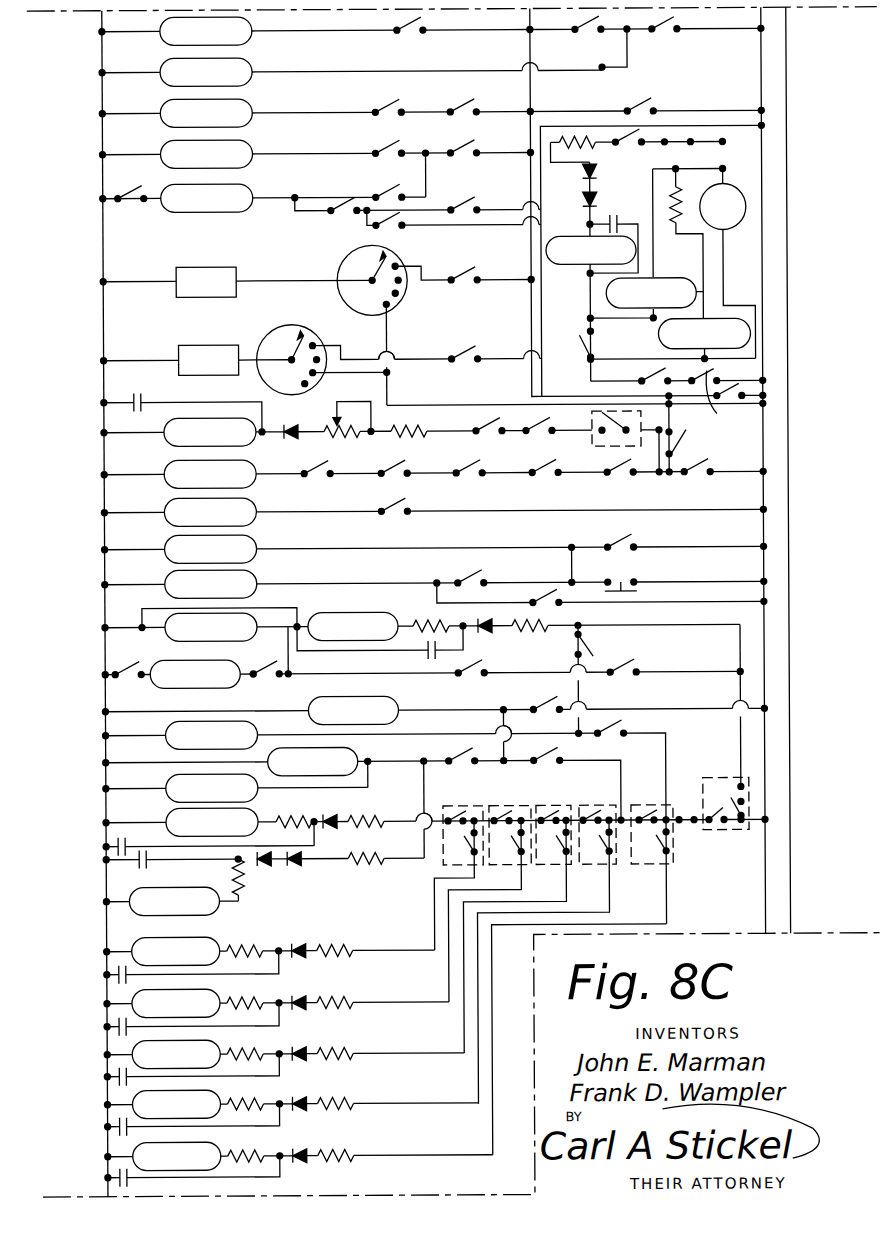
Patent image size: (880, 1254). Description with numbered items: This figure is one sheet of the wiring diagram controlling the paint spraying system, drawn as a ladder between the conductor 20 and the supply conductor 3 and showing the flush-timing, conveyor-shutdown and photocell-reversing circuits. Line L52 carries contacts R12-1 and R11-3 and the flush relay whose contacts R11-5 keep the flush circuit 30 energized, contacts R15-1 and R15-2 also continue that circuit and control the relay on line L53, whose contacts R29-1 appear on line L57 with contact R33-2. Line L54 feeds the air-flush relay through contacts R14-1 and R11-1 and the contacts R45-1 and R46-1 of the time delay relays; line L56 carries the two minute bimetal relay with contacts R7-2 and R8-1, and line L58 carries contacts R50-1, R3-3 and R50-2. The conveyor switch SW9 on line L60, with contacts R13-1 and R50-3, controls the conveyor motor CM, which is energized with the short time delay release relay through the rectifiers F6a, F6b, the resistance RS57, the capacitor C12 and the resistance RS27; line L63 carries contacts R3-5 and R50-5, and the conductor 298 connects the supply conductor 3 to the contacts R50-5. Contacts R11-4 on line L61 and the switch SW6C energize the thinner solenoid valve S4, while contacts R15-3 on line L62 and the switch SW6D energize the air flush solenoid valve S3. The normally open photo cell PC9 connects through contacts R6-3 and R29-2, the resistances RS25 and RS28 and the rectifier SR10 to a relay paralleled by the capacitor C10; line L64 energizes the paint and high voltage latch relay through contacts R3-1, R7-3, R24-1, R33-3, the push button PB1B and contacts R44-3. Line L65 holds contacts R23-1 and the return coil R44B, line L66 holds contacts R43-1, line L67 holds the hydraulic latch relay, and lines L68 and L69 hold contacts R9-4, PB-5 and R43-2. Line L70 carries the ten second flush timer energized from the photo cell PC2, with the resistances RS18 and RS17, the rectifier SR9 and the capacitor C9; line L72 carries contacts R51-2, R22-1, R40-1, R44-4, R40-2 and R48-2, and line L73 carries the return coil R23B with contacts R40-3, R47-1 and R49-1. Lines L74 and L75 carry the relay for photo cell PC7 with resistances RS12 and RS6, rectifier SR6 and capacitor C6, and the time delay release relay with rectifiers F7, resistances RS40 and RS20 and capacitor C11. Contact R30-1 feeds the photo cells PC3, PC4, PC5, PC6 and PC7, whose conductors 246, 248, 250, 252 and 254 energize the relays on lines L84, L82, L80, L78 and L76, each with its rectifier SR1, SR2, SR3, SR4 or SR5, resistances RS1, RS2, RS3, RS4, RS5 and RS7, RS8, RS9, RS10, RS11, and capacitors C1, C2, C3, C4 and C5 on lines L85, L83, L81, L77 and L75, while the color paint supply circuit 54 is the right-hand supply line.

The conductor 20 is at (105, 298).
The flush circuit conductor 30 is at (533, 362).
The color paint supply circuit 54 is at (789, 86).
The supply conductor 3 is at (764, 905).
The conductor 246 is at (490, 1155).
The conductor 248 is at (476, 1104).
The conductor 250 is at (462, 1053).
The conductor 252 is at (447, 1002).
The conductor 254 is at (433, 950).
The conductor 298 is at (672, 420).
The line L52 is at (105, 30).
The line L53 is at (105, 71).
The line L54 is at (105, 112).
The line L56 is at (105, 153).
The line L57 is at (105, 197).
The line L58 is at (297, 210).
The line L60 is at (745, 382).
The line L61 is at (105, 280).
The line L62 is at (105, 359).
The line L63 is at (764, 405).
The line L64 is at (105, 473).
The line L65 is at (105, 511).
The line L66 is at (105, 548).
The line L67 is at (105, 583).
The line L68 is at (764, 603).
The line L69 is at (764, 626).
The line L70 is at (105, 626).
The line L72 is at (105, 673).
The line L73 is at (105, 734).
The line L74 is at (105, 821).
The line L75 is at (105, 858).
The line L76 is at (105, 950).
The line L77 is at (105, 1027).
The line L78 is at (105, 1002).
The line L80 is at (105, 1053).
The line L81 is at (105, 1077).
The line L82 is at (105, 1103).
The line L83 is at (105, 1127).
The line L84 is at (105, 1155).
The line L85 is at (105, 1178).
The automatic flush paint latch coil R44B is at (210, 512).
The return coil R23B is at (211, 735).
The air flush solenoid valve S3 is at (209, 360).
The thinner solenoid valve S4 is at (206, 282).
The gang switch section SW6C is at (340, 272).
The gang switch section SW6D is at (278, 325).
The conveyor switch SW9 is at (725, 401).
The conveyor motor CM is at (728, 263).
The capacitor C1 is at (115, 1173).
The capacitor C2 is at (115, 1122).
The capacitor C3 is at (115, 1072).
The capacitor C4 is at (115, 1022).
The capacitor C5 is at (115, 970).
The capacitor C6 is at (115, 843).
The capacitor C9 is at (425, 650).
The capacitor C10 is at (143, 398).
The capacitor C11 is at (137, 868).
The capacitor C12 is at (605, 222).
The rectifier F6a is at (598, 172).
The rectifier F6b is at (598, 198).
The rectifiers F7 is at (293, 865).
The rectifier SR1 is at (296, 1147).
The rectifier SR2 is at (295, 1095).
The rectifier SR3 is at (295, 1045).
The rectifier SR4 is at (293, 994).
The rectifier SR5 is at (288, 942).
The rectifier SR6 is at (330, 812).
The rectifier SR9 is at (490, 633).
The rectifier SR10 is at (287, 446).
The resistance RS1 is at (340, 1147).
The resistance RS2 is at (340, 1095).
The resistance RS3 is at (340, 1045).
The resistance RS4 is at (340, 994).
The resistance RS5 is at (340, 942).
The resistance RS6 is at (370, 815).
The resistance RS7 is at (245, 1149).
The resistance RS8 is at (245, 1097).
The resistance RS9 is at (243, 1047).
The resistance RS10 is at (243, 996).
The resistance RS11 is at (247, 945).
The resistance RS12 is at (293, 816).
The resistor RS17 is at (545, 618).
The resistor RS18 is at (430, 620).
The resistance RS20 is at (243, 890).
The resistance RS25 is at (400, 444).
The resistor RS27 is at (675, 200).
The variable resistance RS28 is at (341, 432).
The resistance RS40 is at (350, 865).
The resistance RS57 is at (575, 140).
The photo cell PC2 is at (715, 779).
The photo cell PC3 is at (638, 806).
The photo cell PC4 is at (600, 806).
The photo cell PC5 is at (542, 806).
The photo cell PC6 is at (498, 806).
The photo cell PC7 is at (453, 806).
The photo cell PC9 is at (625, 447).
The push button PB1B is at (385, 478).
The push button contact PB-5 is at (618, 575).
The relay contacts R12-1 is at (426, 40).
The relay contacts R15-1 is at (604, 35).
The relay contacts R11-3 is at (685, 30).
The relay contacts R15-2 is at (608, 72).
The relay contacts R14-1 is at (378, 112).
The relay contacts R11-1 is at (455, 112).
The relay contact R45-1 is at (632, 112).
The relay contacts R46-1 is at (678, 112).
The relay contacts R7-2 is at (395, 150).
The relay contacts R8-1 is at (455, 150).
The relay contacts R29-1 is at (135, 200).
The relay contact R33-2 is at (402, 195).
The relay contacts R50-1 is at (345, 212).
The relay contacts R3-3 is at (465, 210).
The relay contacts R50-2 is at (408, 228).
The relay contacts R11-4 is at (465, 282).
The relay contacts R15-3 is at (457, 358).
The relay contacts R11-5 is at (635, 115).
The relay contact R13-1 is at (585, 350).
The relay contacts R50-3 is at (660, 378).
The relay contact R3-5 is at (760, 395).
The relay contacts R50-5 is at (680, 445).
The relay contact R29-2 is at (476, 441).
The relay contacts R6-3 is at (534, 440).
The relay contacts R44-3 is at (330, 478).
The relay contacts R33-3 is at (460, 478).
The relay contacts R24-1 is at (538, 478).
The relay contacts R7-3 is at (618, 478).
The relay contacts R3-1 is at (690, 478).
The relay contacts R23-1 is at (398, 514).
The relay contacts R43-1 is at (615, 535).
The relay contact R9-4 is at (465, 575).
The relay contacts R43-2 is at (540, 595).
The relay contacts R51-2 is at (130, 668).
The relay contact R22-1 is at (275, 676).
The relay contacts R40-1 is at (472, 676).
The relay contacts R44-4 is at (630, 668).
The relay contacts R40-2 is at (590, 655).
The relay contacts R48-2 is at (545, 705).
The relay contacts R40-3 is at (615, 728).
The relay contacts R47-1 is at (467, 753).
The relay contacts R49-1 is at (552, 752).
The relay contact R30-1 is at (688, 825).